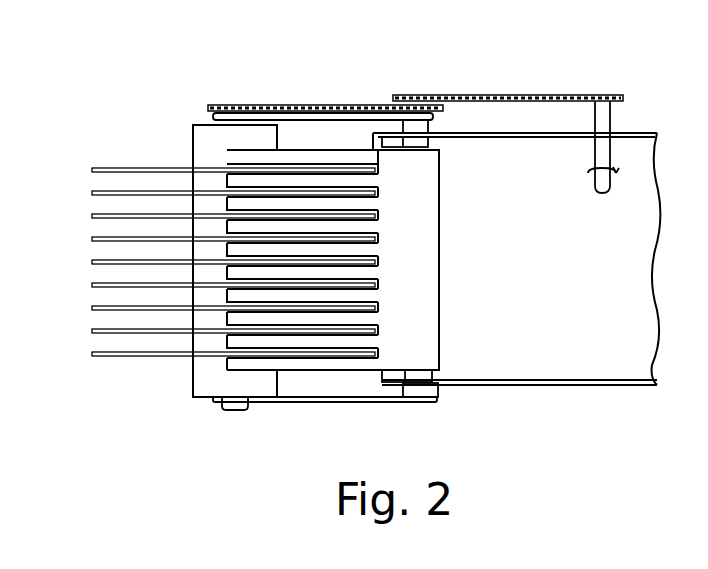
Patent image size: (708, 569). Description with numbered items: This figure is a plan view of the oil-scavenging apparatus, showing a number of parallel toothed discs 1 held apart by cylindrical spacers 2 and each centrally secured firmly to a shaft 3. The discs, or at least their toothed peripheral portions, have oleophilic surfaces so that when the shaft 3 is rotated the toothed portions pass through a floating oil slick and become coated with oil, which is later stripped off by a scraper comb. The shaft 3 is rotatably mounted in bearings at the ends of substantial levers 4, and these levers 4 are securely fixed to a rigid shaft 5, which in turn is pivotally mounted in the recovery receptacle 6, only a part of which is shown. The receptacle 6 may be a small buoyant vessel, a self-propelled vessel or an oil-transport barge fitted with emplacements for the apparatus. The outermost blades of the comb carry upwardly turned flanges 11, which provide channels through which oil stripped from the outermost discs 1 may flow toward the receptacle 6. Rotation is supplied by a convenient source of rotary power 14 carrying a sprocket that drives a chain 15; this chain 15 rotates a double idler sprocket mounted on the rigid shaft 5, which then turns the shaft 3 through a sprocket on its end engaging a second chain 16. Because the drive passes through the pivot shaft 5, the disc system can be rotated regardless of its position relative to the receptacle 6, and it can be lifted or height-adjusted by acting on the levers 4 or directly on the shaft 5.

The toothed discs 1 is at (92, 287).
The cylindrical spacers 2 is at (202, 293).
The shaft 3 is at (235, 412).
The levers 4 is at (213, 120).
The rigid shaft 5 is at (430, 143).
The recovery receptacle 6 is at (552, 370).
The upwardly turned flanges 11 is at (350, 148).
The source of rotary power 14 is at (603, 148).
The chain 15 is at (510, 95).
The chain 16 is at (305, 105).